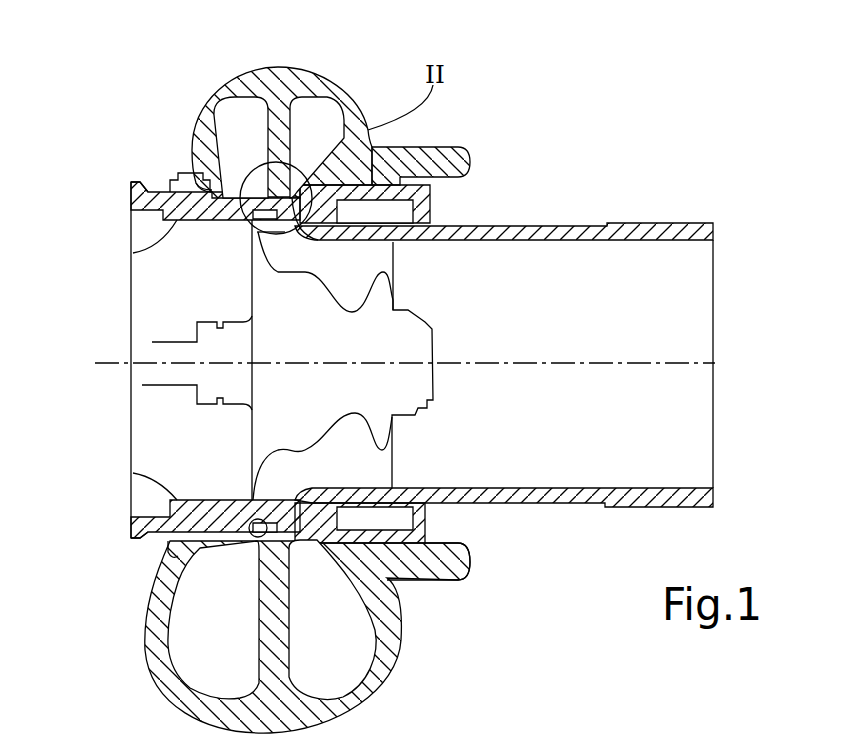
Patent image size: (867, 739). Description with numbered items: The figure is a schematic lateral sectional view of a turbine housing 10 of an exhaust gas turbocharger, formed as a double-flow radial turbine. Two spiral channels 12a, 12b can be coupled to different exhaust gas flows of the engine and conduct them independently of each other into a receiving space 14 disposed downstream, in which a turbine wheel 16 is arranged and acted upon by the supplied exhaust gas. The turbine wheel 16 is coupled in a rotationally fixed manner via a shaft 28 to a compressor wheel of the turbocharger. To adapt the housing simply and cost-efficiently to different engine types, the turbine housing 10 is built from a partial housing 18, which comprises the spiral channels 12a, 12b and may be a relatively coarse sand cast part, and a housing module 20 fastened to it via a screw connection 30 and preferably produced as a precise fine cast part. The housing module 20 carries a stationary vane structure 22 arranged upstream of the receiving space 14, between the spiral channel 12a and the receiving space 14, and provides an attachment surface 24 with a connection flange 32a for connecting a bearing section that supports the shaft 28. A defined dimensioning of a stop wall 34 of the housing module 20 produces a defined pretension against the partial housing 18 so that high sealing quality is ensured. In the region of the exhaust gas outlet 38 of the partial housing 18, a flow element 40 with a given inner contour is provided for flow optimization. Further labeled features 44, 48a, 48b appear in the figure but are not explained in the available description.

The turbine housing 10 is at (563, 113).
The spiral channel 12a is at (257, 125).
The spiral channel 12b is at (310, 120).
The receiving space 14 is at (403, 447).
The turbine wheel 16 is at (433, 343).
The partial housing 18 is at (470, 173).
The housing module 20 is at (148, 255).
The vane structure 22 is at (247, 196).
The attachment surface 24 is at (129, 183).
The shaft 28 is at (160, 354).
The screw connection 30 is at (170, 543).
The connection flange 32a is at (143, 183).
The stop wall 34 is at (201, 174).
The exhaust gas outlet 38 is at (673, 318).
The flow element 40 is at (633, 225).
The channel 44 is at (277, 627).
The first sealing surface 48a is at (271, 235).
The second sealing surface 48b is at (297, 232).